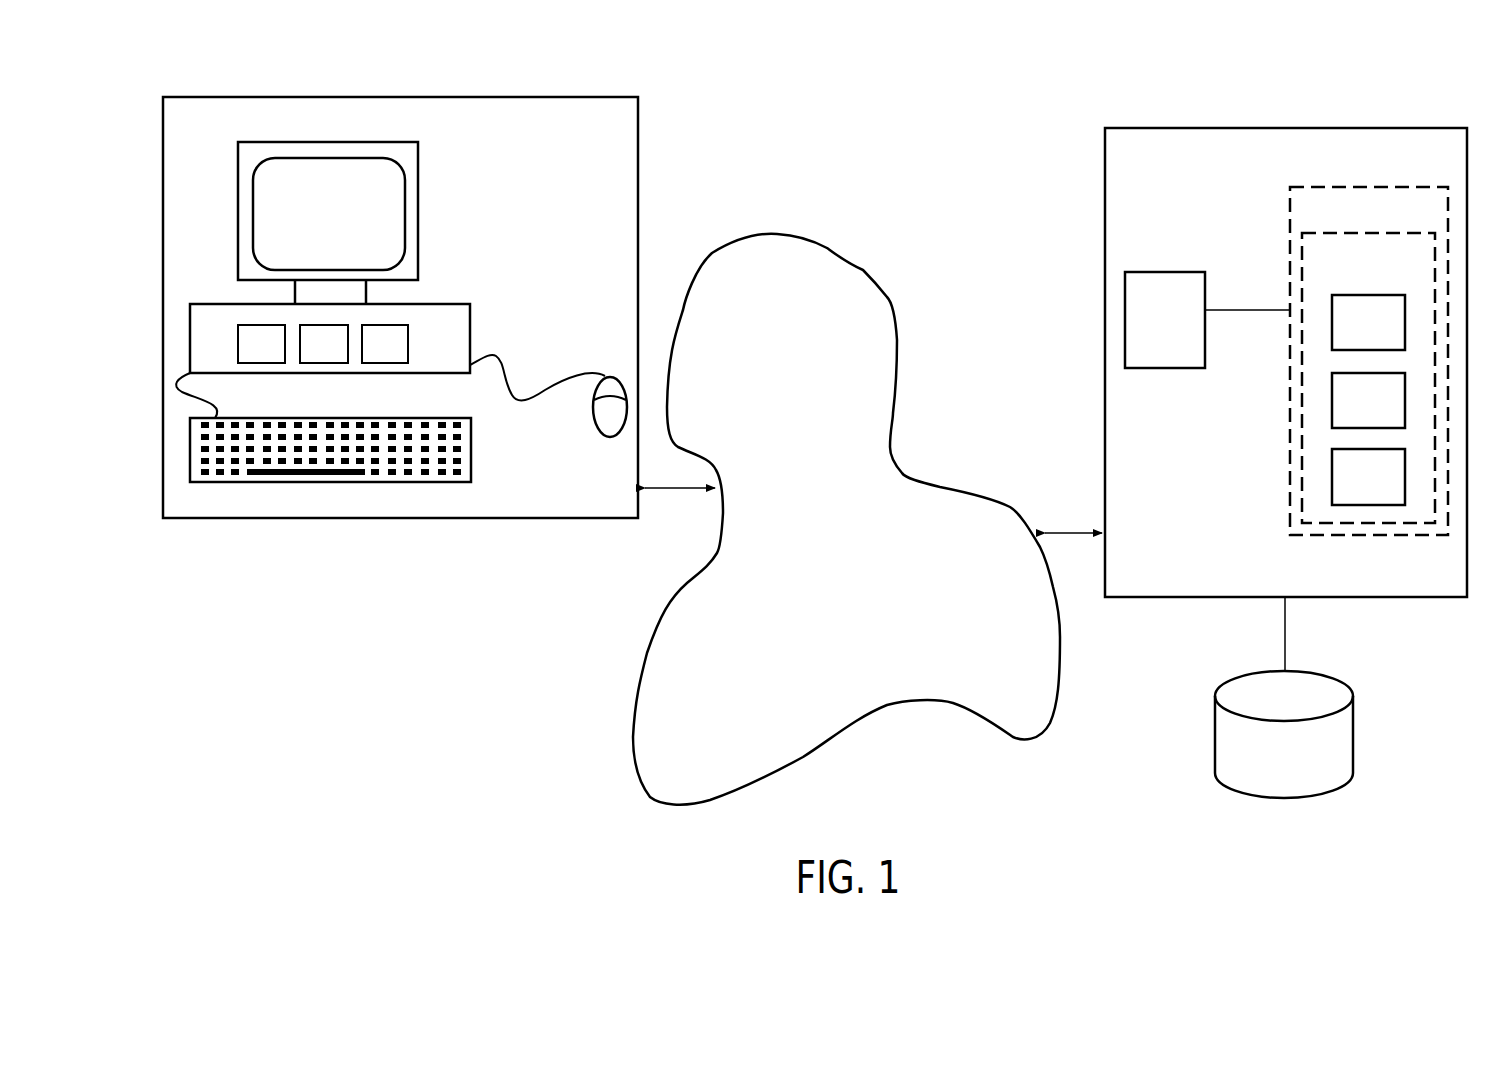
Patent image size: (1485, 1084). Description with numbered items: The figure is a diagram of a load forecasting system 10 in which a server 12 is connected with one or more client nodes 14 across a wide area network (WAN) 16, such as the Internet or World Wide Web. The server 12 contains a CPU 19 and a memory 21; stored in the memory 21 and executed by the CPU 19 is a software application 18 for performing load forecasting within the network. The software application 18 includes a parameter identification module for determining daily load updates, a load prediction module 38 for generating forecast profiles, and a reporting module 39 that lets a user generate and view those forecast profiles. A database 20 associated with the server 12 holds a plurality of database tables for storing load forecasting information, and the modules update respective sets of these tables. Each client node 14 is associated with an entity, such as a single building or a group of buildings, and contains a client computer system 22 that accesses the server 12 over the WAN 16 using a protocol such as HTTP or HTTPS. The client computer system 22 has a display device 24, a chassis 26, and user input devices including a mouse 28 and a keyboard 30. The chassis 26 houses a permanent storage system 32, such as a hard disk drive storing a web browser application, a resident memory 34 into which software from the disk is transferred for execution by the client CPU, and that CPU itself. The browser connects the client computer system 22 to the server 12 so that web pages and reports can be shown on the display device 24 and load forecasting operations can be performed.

The load forecasting system 10 is at (988, 104).
The server 12 is at (1286, 362).
The client node 14 is at (400, 307).
The wide area network (WAN) 16 is at (846, 519).
The software application 18 is at (1368, 378).
The CPU 19 is at (1165, 320).
The database 20 is at (1284, 697).
The memory 21 is at (1369, 361).
The client computer system 22 is at (403, 302).
The display device 24 is at (328, 211).
The chassis 26 is at (330, 338).
The mouse 28 is at (618, 378).
The keyboard 30 is at (471, 440).
The permanent storage system 32 is at (261, 344).
The resident memory 34 is at (324, 344).
The load prediction module 38 is at (1368, 400).
The reporting module 39 is at (1368, 477).